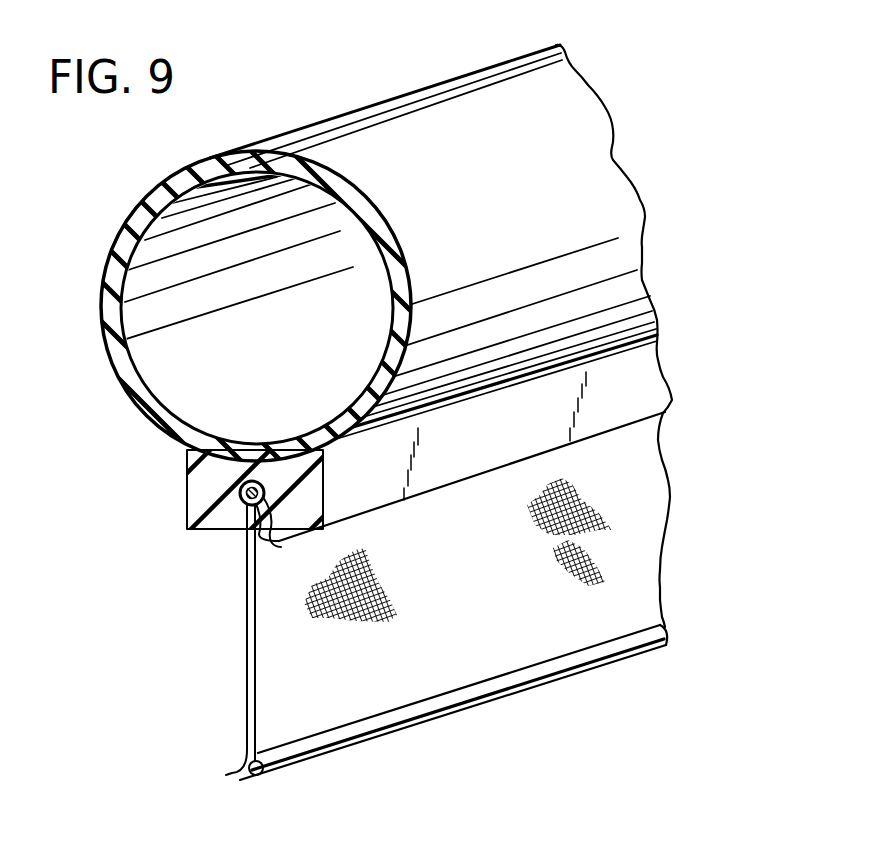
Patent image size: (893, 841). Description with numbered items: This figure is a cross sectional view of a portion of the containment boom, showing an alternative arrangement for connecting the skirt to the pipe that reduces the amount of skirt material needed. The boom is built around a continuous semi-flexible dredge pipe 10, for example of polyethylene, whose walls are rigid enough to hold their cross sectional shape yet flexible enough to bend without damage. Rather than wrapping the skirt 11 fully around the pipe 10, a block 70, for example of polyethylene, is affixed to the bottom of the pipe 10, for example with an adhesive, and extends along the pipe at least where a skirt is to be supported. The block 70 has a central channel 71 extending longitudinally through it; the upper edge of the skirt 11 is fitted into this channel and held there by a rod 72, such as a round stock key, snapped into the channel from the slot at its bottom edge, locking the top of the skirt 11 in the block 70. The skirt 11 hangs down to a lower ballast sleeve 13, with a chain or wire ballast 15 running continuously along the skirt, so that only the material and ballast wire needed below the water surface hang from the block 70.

The dredge pipe 10 is at (103, 333).
The skirt 11 is at (645, 581).
The ballast sleeve 13 is at (557, 666).
The ballast 15 is at (230, 763).
The block 70 is at (200, 523).
The central channel 71 is at (264, 489).
The rod 72 is at (240, 495).